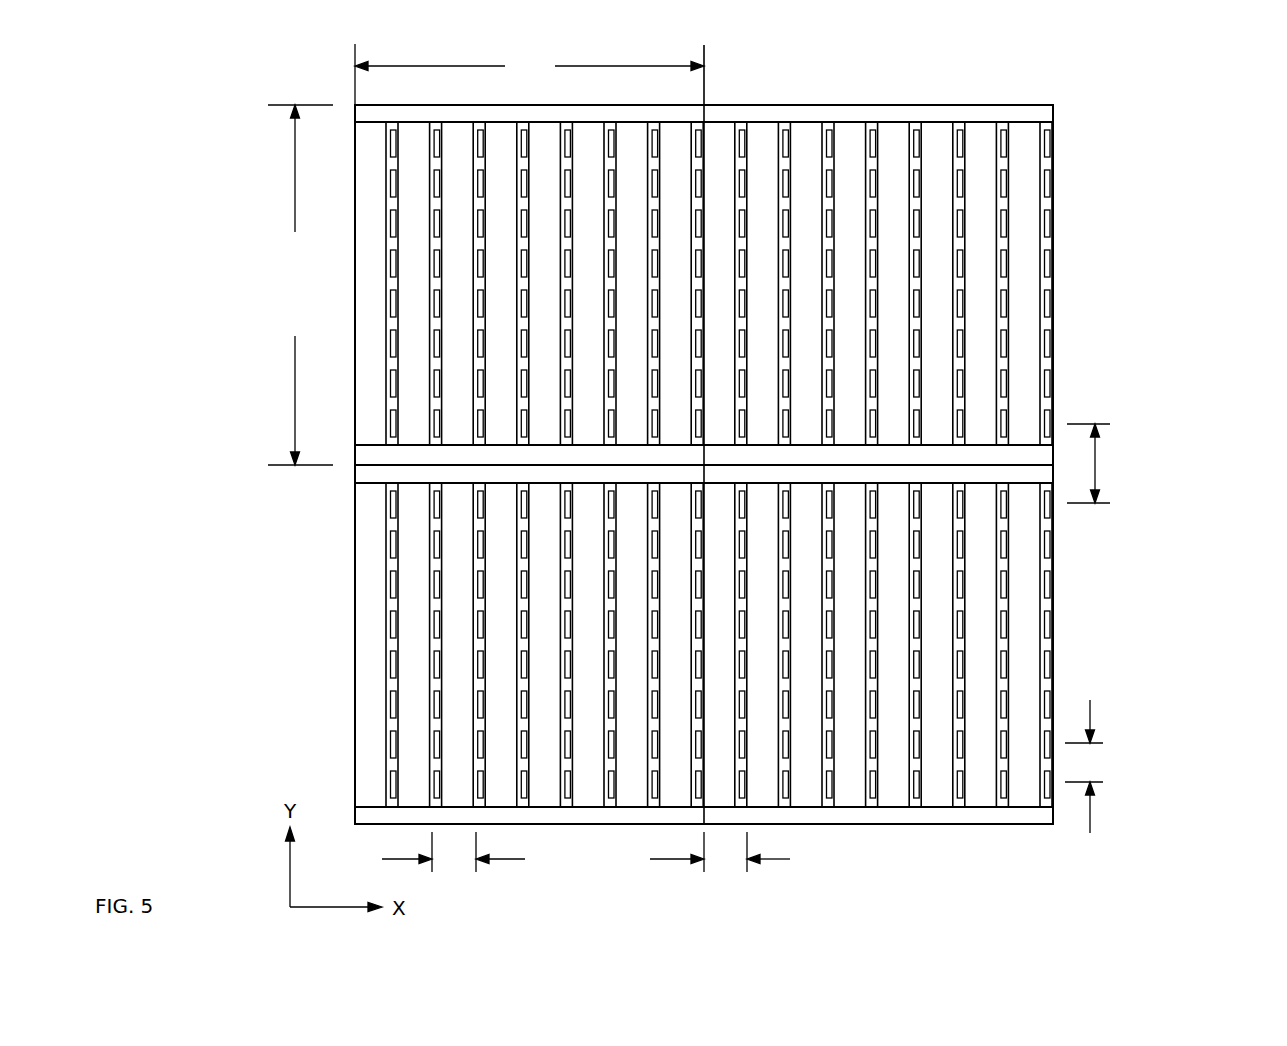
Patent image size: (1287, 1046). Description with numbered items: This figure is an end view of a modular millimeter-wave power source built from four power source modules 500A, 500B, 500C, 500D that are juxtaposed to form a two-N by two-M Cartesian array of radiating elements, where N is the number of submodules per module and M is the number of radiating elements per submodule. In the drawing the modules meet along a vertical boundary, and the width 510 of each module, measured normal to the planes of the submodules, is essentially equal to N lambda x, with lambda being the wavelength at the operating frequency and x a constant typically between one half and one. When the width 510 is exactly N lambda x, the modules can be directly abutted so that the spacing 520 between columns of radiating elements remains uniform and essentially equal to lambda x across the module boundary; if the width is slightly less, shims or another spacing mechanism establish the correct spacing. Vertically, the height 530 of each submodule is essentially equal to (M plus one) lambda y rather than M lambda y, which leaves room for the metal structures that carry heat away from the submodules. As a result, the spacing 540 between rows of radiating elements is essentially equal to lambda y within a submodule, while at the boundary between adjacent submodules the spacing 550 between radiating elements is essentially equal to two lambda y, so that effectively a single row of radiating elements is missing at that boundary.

The power source module 500A is at (372, 104).
The power source module 500B is at (353, 632).
The power source module 500C is at (900, 104).
The power source module 500D is at (892, 825).
The width of each module 510 is at (665, 63).
The spacing between columns of radiating elements 520 is at (502, 860).
The height of each submodule 530 is at (295, 373).
The spacing between rows of radiating elements 540 is at (1090, 705).
The spacing between radiating elements at submodule boundaries 550 is at (1095, 453).